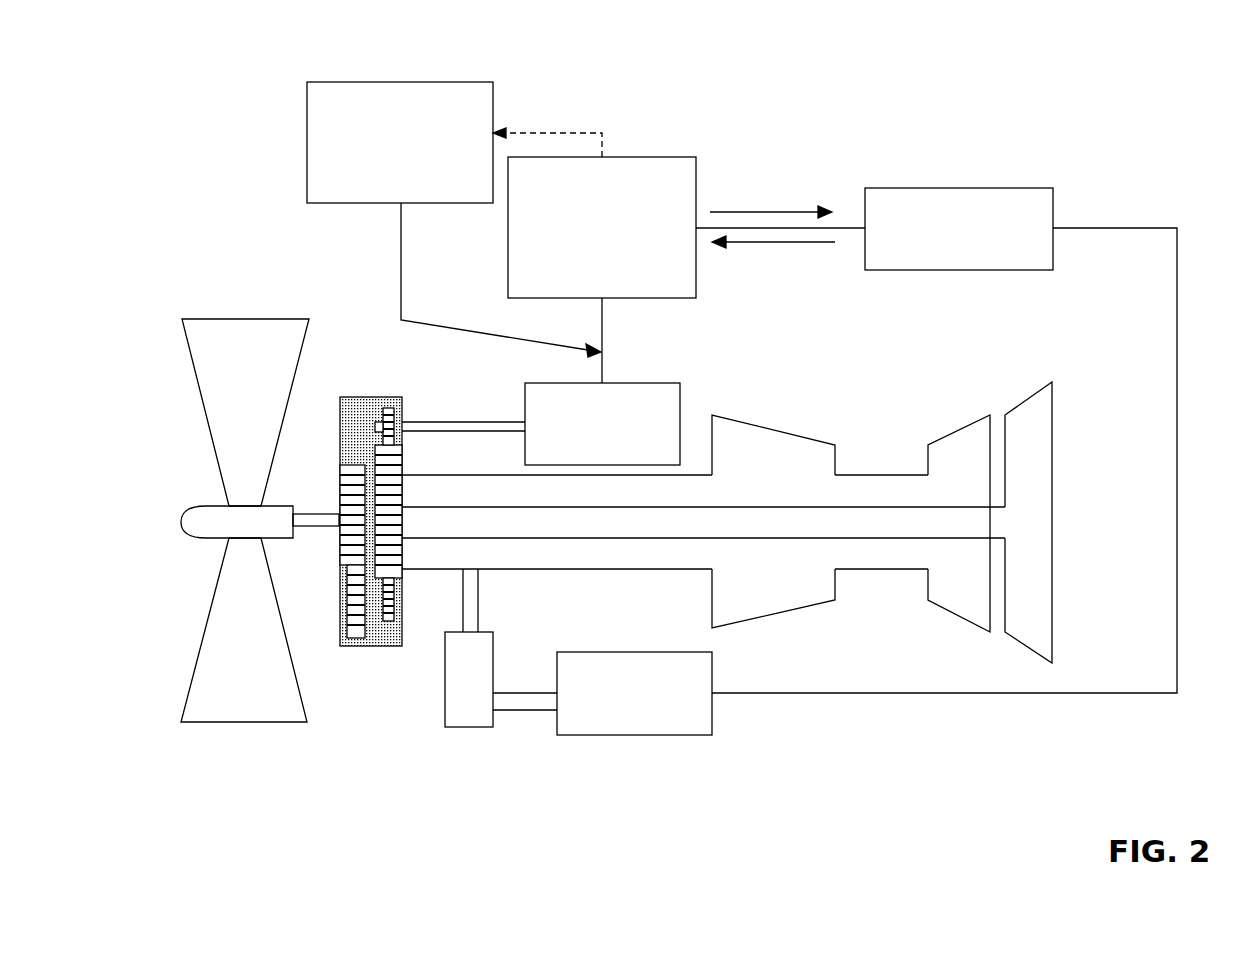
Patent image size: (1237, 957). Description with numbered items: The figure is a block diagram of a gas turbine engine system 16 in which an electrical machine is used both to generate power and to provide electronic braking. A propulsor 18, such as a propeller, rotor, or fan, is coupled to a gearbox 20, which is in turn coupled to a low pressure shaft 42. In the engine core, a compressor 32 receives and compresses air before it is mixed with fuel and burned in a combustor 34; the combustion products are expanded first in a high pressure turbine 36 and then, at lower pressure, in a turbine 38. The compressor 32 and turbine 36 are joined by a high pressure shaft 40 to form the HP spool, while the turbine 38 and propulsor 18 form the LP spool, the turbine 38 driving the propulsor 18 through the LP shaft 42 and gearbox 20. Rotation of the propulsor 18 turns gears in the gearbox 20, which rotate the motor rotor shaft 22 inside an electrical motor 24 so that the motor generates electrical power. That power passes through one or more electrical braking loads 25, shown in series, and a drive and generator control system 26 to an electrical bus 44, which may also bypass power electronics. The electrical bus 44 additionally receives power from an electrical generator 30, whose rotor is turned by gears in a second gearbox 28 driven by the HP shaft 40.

The gas turbine engine system 16 is at (1153, 134).
The propulsor 18 is at (243, 319).
The gearbox 20 is at (350, 397).
The motor rotor shaft 22 is at (455, 422).
The electrical motor 24 is at (590, 458).
The electrical braking loads 25 is at (388, 188).
The drive and generator control system 26 is at (590, 288).
The gearbox 28 is at (457, 685).
The electrical generator 30 is at (621, 728).
The compressor 32 is at (768, 442).
The combustor 34 is at (869, 451).
The turbine 36 is at (972, 433).
The turbine 38 is at (1040, 402).
The high pressure shaft 40 is at (853, 501).
The low pressure shaft 42 is at (664, 535).
The electrical bus 44 is at (947, 263).